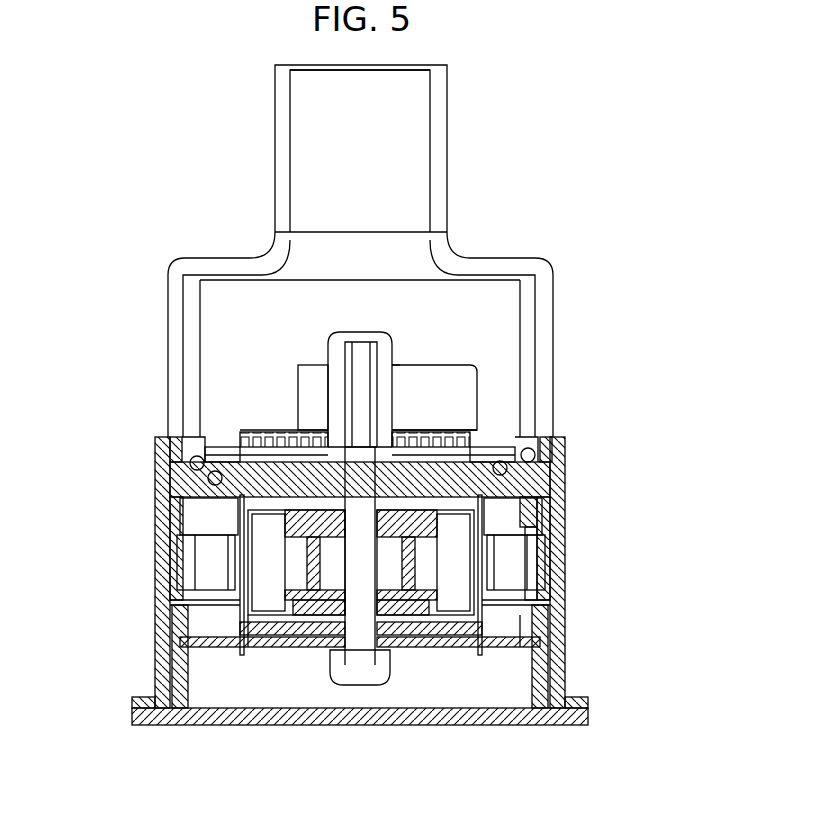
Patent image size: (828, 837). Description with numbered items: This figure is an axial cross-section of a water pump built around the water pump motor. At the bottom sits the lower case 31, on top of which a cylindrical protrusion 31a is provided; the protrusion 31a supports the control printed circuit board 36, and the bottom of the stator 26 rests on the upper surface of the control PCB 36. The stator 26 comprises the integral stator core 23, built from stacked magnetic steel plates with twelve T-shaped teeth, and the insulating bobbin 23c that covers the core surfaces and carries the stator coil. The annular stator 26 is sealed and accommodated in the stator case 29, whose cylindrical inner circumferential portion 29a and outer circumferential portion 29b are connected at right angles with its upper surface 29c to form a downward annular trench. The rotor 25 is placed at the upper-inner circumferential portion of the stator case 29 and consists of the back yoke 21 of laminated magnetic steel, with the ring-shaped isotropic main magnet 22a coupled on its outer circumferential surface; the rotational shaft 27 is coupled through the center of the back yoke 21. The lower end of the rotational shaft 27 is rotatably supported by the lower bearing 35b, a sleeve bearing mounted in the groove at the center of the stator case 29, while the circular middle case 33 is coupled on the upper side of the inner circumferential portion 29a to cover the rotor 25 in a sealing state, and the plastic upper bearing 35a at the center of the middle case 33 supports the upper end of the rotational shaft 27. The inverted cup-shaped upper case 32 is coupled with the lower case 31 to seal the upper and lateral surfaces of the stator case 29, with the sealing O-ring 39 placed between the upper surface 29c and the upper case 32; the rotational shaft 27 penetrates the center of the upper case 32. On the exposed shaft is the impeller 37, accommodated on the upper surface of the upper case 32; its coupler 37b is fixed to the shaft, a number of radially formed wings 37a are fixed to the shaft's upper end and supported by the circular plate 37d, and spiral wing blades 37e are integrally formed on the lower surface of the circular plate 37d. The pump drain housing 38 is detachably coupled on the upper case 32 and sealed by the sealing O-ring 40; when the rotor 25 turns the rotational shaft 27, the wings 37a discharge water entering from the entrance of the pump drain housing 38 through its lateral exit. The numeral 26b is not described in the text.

The back yoke 21 is at (330, 560).
The isotropic main magnet 22a is at (176, 487).
The stator core 23 is at (250, 570).
The bobbin 23c is at (186, 510).
The rotor 25 is at (410, 650).
The stator 26 is at (520, 650).
The lower plate portion 26b is at (265, 650).
The rotational shaft 27 is at (347, 418).
The stator case 29 is at (185, 597).
The inner circumferential portion 29a is at (556, 577).
The outer circumferential portion 29b is at (556, 612).
The upper surface 29c is at (555, 528).
The lower case 31 is at (140, 716).
The cylindrical protrusion 31a is at (576, 702).
The upper case 32 is at (325, 450).
The middle case 33 is at (168, 462).
The upper bearing 35a is at (330, 440).
The lower bearing 35b is at (330, 648).
The control printed circuit board 36 is at (185, 640).
The impeller 37 is at (326, 328).
The wings 37a is at (467, 400).
The coupler 37b is at (390, 364).
The circular plate 37d is at (548, 440).
The wing blades 37e is at (330, 430).
The pump drain housing 38 is at (272, 240).
The sealing O-ring 39 is at (520, 490).
The sealing O-ring 40 is at (540, 462).